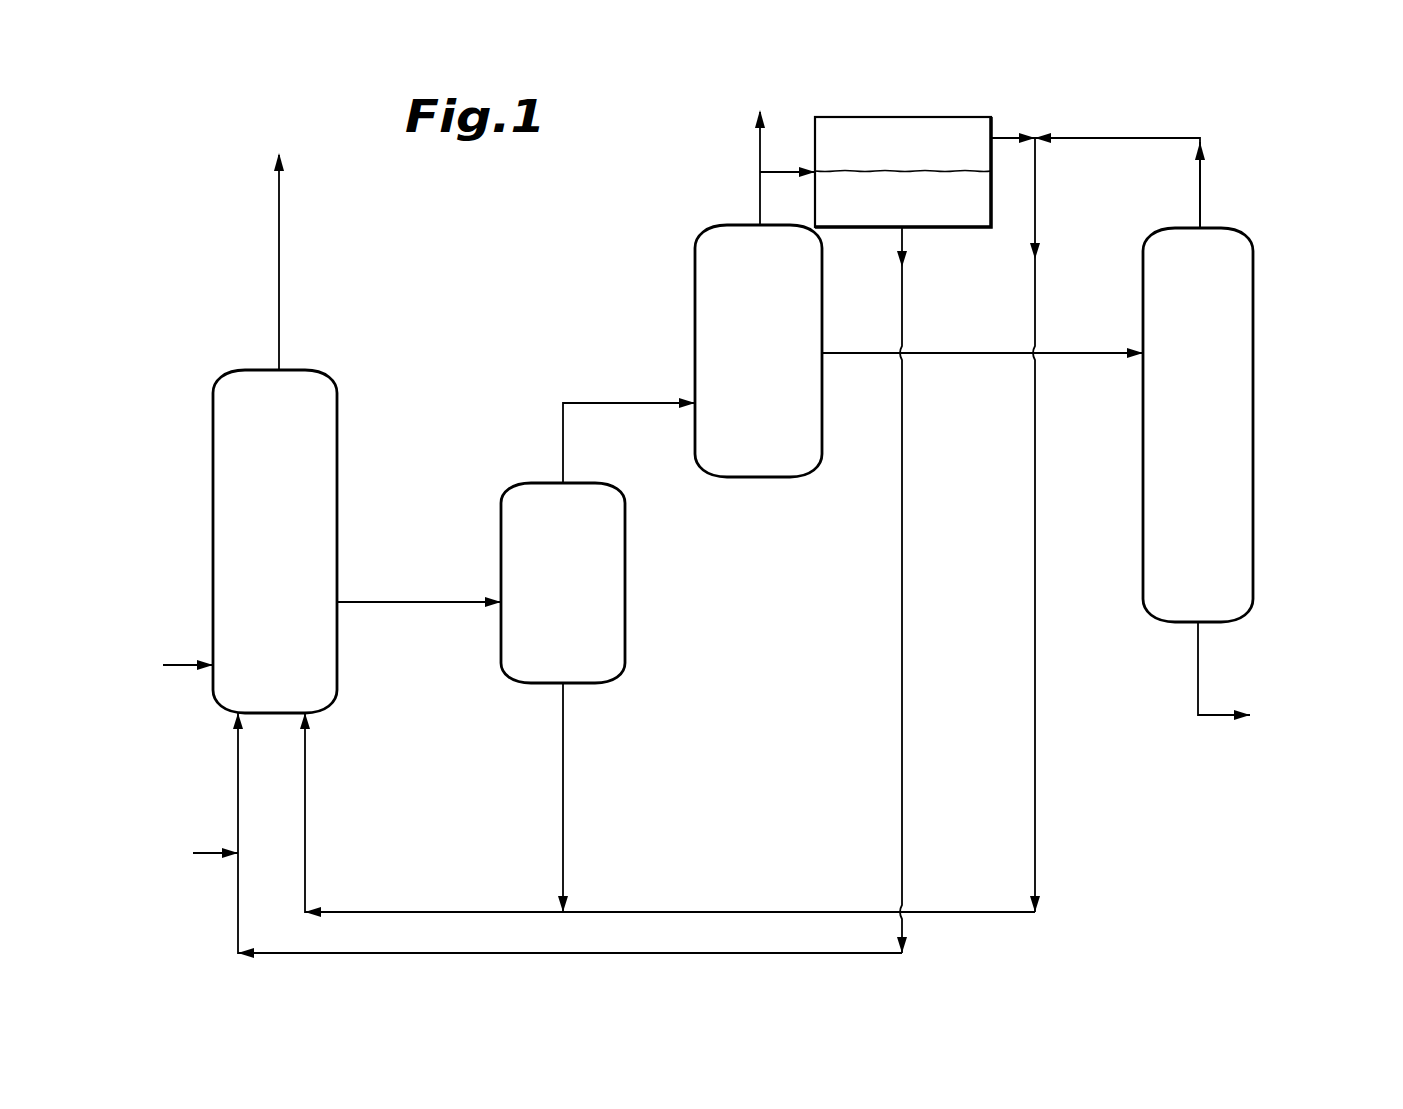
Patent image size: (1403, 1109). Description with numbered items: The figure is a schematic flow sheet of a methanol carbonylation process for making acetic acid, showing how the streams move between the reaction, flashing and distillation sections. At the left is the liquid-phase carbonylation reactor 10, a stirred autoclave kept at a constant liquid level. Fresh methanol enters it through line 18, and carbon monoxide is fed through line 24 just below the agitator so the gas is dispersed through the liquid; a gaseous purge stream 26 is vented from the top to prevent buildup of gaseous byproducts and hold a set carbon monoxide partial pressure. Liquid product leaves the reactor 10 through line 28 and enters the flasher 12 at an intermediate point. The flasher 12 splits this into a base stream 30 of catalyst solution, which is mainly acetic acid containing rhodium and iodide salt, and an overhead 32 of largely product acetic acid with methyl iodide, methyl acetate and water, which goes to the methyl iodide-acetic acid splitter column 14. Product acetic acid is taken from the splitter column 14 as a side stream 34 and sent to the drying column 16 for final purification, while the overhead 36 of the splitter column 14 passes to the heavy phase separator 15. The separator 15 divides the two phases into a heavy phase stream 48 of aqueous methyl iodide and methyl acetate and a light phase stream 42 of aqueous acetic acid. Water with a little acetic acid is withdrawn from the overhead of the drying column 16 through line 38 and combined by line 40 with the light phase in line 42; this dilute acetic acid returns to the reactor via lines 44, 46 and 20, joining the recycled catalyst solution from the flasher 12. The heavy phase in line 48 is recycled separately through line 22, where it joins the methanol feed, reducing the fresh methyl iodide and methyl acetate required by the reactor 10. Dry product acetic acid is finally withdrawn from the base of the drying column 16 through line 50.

The carbonylation reactor 10 is at (212, 438).
The flasher 12 is at (503, 500).
The methyl iodide-acetic acid splitter column 14 is at (697, 272).
The heavy phase separator 15 is at (890, 117).
The drying column 16 is at (1255, 327).
The methanol feed line 18 is at (205, 851).
The catalyst recycle line 20 is at (428, 911).
The heavy phase recycle line 22 is at (450, 952).
The carbon monoxide feed line 24 is at (178, 662).
The gaseous purge stream 26 is at (277, 282).
The liquid product line 28 is at (408, 600).
The flasher base stream 30 is at (561, 762).
The flasher overhead 32 is at (561, 432).
The side stream 34 is at (881, 352).
The splitter column overhead 36 is at (758, 207).
The drying column overhead line 38 is at (1202, 187).
The combining line 40 is at (1108, 138).
The light phase stream 42 is at (1007, 138).
The recycle line 44 is at (1037, 306).
The recycle line 46 is at (690, 911).
The heavy phase stream 48 is at (904, 315).
The dry product line 50 is at (1195, 667).